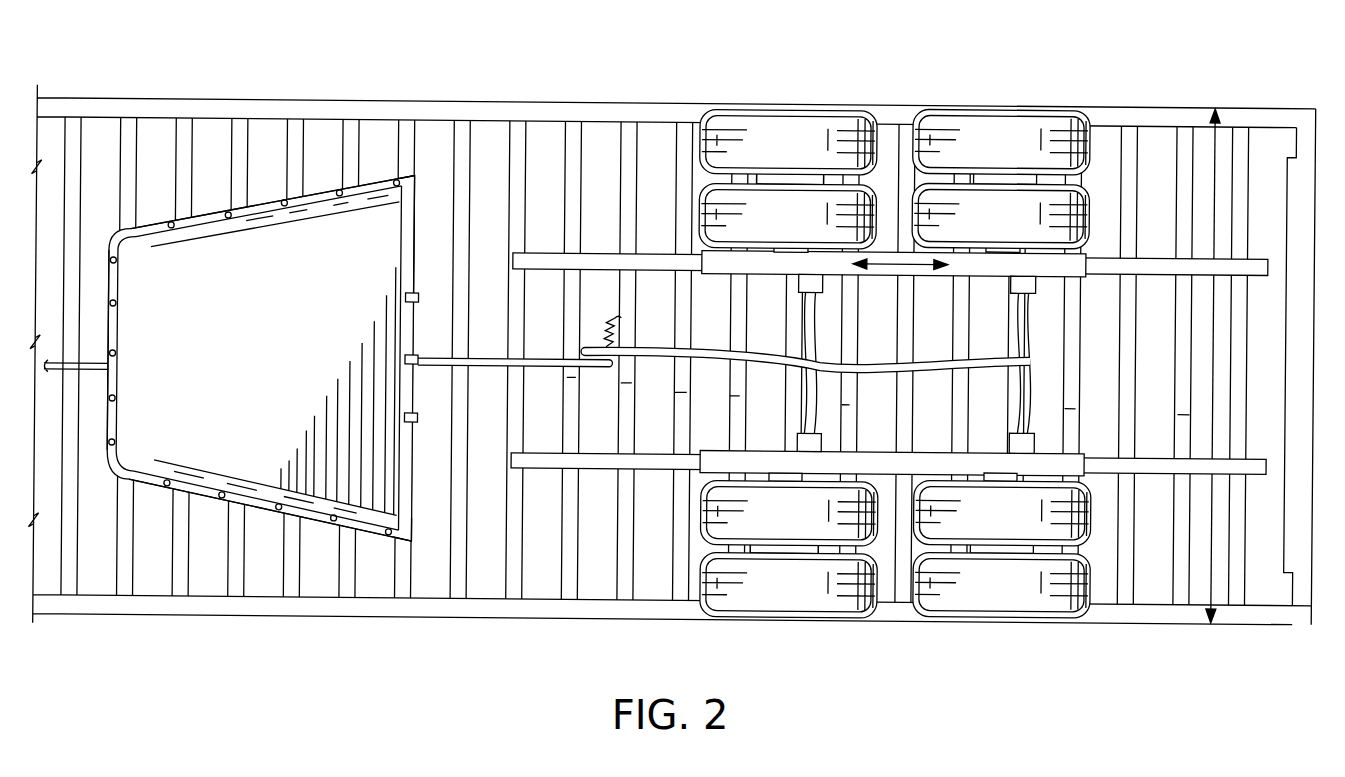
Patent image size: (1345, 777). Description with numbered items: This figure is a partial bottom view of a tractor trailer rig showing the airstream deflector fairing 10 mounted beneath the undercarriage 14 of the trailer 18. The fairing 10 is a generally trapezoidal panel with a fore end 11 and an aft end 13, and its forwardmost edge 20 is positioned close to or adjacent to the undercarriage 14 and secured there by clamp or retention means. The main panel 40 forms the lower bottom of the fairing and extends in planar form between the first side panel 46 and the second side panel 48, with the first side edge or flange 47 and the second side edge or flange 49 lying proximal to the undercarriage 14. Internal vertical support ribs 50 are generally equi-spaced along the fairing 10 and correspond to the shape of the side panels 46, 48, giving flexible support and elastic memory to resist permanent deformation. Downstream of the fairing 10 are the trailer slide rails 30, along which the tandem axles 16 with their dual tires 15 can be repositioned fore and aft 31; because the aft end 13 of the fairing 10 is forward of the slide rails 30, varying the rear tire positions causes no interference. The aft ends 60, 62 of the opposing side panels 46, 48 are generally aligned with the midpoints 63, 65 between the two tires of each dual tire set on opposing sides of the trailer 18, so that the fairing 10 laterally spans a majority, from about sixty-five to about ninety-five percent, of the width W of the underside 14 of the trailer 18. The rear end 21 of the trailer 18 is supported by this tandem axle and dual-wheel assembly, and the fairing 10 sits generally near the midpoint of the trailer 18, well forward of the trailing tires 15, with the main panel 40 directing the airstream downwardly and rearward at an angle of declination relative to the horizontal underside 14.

The airstream deflector fairing 10 is at (214, 509).
The fore end 11 is at (108, 435).
The aft end 13 is at (406, 232).
The undercarriage 14 is at (110, 148).
The tires 15 is at (826, 108).
The axle 16 is at (780, 174).
The trailer 18 is at (487, 103).
The forwardmost edge 20 is at (106, 288).
The rear end 21 is at (1313, 139).
The trailer slide rails 30 is at (598, 255).
The fore and aft direction 31 is at (890, 268).
The main panel 40 is at (226, 300).
The first side panel 46 is at (323, 203).
The first side edge 47 is at (262, 203).
The second side panel 48 is at (319, 506).
The second side edge 49 is at (265, 508).
The internal vertical support ribs 50 is at (419, 356).
The aft end of first side panel 60 is at (410, 214).
The aft end of second side panel 62 is at (417, 542).
The midpoint between tires 63 is at (703, 177).
The midpoint between tires 65 is at (707, 550).
The width of the underside W is at (1211, 160).